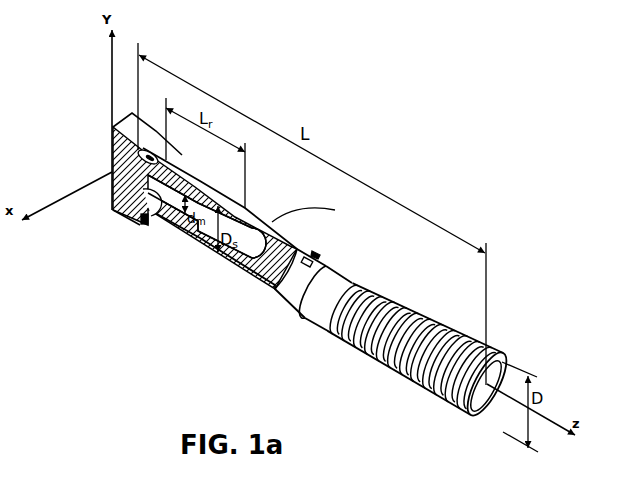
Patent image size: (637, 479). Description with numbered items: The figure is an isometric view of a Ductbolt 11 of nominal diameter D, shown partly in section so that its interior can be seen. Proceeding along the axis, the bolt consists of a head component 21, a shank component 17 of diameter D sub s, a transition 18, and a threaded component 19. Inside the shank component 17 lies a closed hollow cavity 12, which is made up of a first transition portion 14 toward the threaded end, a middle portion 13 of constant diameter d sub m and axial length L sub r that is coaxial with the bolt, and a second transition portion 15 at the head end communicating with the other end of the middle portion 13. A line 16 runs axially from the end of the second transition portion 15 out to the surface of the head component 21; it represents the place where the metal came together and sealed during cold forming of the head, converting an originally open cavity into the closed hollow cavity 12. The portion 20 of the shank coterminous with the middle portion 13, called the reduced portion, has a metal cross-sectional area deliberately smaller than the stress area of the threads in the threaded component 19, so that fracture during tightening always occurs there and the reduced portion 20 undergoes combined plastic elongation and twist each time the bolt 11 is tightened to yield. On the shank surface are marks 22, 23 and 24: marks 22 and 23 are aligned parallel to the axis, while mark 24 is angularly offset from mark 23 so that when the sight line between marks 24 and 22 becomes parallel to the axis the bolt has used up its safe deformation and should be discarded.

The Ductbolt 11 is at (472, 412).
The closed hollow cavity 12 is at (200, 248).
The middle portion 13 is at (203, 212).
The first transition portion 14 is at (258, 267).
The second transition portion 15 is at (150, 226).
The line 16 is at (122, 213).
The shank component 17 is at (314, 212).
The transition 18 is at (320, 308).
The threaded component 19 is at (378, 360).
The reduced portion 20 is at (180, 232).
The head component 21 is at (112, 134).
The mark 22 is at (154, 152).
The mark 23 is at (318, 256).
The mark 24 is at (312, 264).